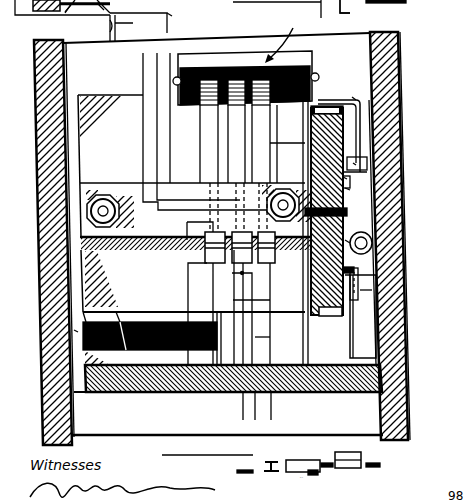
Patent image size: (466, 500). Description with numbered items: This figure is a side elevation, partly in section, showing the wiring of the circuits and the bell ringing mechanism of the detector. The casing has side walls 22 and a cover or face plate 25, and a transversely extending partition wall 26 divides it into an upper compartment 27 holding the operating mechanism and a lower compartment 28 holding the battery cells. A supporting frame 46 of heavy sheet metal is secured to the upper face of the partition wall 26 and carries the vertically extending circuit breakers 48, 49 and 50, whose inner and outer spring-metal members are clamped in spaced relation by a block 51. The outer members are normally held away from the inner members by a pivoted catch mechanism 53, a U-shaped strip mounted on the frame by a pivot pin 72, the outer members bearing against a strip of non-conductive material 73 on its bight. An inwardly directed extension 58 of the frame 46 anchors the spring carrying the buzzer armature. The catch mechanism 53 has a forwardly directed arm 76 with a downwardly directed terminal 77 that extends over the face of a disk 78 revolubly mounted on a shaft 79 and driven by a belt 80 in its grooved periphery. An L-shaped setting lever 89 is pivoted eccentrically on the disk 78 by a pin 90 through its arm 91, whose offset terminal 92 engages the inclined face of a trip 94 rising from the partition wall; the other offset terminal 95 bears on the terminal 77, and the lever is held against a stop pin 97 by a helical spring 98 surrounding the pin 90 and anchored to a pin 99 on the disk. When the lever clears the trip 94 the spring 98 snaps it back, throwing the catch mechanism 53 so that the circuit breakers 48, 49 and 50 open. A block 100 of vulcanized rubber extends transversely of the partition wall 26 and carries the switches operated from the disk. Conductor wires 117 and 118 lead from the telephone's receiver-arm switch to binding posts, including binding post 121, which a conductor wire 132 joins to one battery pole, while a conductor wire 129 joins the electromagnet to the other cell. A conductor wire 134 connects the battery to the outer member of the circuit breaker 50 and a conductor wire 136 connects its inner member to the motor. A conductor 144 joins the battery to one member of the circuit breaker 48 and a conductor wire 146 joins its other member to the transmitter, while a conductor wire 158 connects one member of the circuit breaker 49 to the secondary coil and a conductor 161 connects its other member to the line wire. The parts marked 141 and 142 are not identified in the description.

The side walls 22 is at (233, 41).
The cover or face plate 25 is at (395, 181).
The partition wall 26 is at (350, 383).
The upper compartment 27 is at (110, 72).
The lower compartment 28 is at (227, 413).
The supporting frame 46 is at (191, 166).
The circuit breaker 48 is at (273, 133).
The circuit breaker 49 is at (271, 150).
The circuit breaker 50 is at (208, 144).
The block 51 is at (193, 281).
The catch mechanism 53 is at (287, 33).
The inwardly directed extension 58 is at (151, 321).
The pivot pin 72 is at (318, 74).
The strip of non-conductive material 73 is at (200, 68).
The forwardly directed arm 76 is at (325, 110).
The downwardly directed terminal 77 is at (365, 158).
The disk 78 is at (352, 125).
The shaft 79 is at (400, 199).
The belt 80 is at (352, 98).
The setting lever 89 is at (350, 190).
The pin 90 is at (372, 248).
The arm 91 is at (352, 271).
The offset terminal 92 is at (385, 291).
The trip 94 is at (363, 336).
The offset terminal 95 is at (355, 165).
The stop pin 97 is at (347, 178).
The helical spring 98 is at (358, 258).
The pin 99 is at (362, 232).
The block 100 is at (128, 308).
The conductor wire 117 is at (115, 23).
The conductor wire 118 is at (88, 17).
The binding post 121 is at (53, 17).
The conductor wire 129 is at (401, 10).
The conductor wire 132 is at (170, 17).
The conductor wire 134 is at (242, 303).
The conductor wire 136 is at (236, 322).
The conductor 141 is at (366, 10).
The conductor 142 is at (116, 313).
The conductor 144 is at (257, 337).
The conductor wire 146 is at (188, 200).
The conductor wire 158 is at (171, 119).
The conductor 161 is at (258, 408).